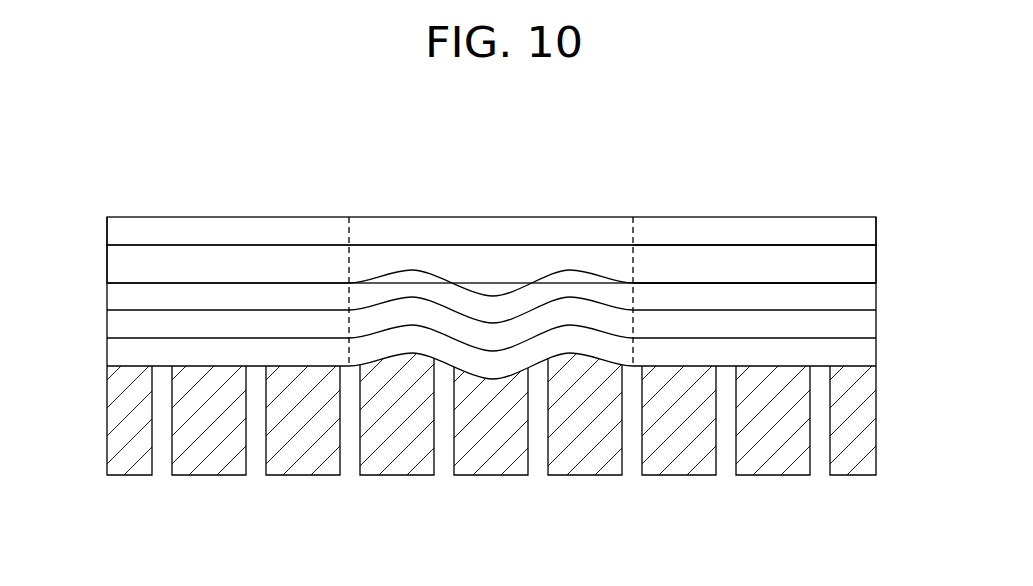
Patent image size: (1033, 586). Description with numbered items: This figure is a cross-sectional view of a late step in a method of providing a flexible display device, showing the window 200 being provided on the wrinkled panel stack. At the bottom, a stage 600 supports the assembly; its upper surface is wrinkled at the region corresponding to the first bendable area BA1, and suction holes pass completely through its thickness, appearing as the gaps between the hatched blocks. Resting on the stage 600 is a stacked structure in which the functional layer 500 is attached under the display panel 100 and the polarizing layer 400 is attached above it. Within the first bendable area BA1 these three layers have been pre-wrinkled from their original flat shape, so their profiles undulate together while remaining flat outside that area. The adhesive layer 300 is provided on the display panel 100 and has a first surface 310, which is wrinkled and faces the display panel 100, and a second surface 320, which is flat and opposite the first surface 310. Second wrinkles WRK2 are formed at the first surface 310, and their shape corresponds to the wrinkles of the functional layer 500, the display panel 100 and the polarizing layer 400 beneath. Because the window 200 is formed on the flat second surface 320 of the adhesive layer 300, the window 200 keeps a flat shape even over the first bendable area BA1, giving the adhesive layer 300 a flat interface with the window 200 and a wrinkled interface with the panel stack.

The display panel 100 is at (110, 317).
The window 200 is at (110, 227).
The adhesive layer 300 is at (110, 257).
The first surface 310 is at (867, 285).
The second surface 320 is at (867, 247).
The polarizing layer 400 is at (110, 288).
The functional layer 500 is at (110, 345).
The stage 600 is at (108, 435).
The first bendable area BA1 is at (492, 338).
The second wrinkles WRK2 is at (578, 288).